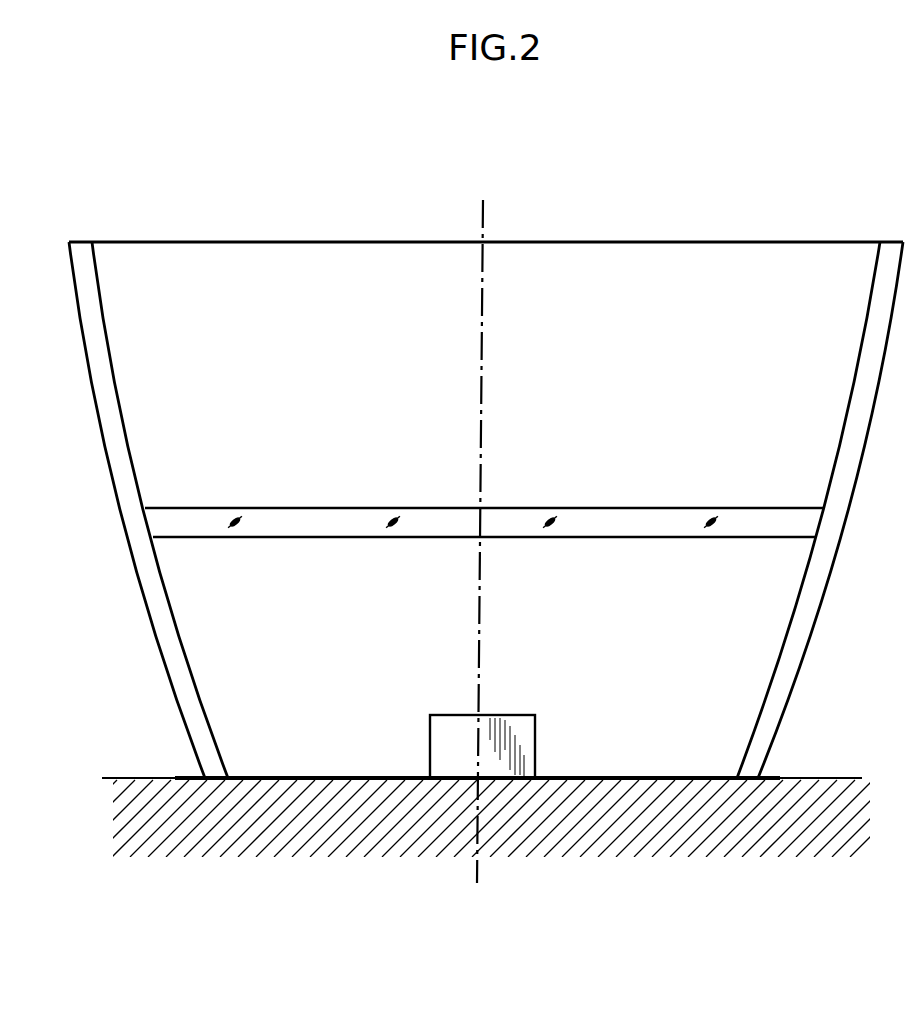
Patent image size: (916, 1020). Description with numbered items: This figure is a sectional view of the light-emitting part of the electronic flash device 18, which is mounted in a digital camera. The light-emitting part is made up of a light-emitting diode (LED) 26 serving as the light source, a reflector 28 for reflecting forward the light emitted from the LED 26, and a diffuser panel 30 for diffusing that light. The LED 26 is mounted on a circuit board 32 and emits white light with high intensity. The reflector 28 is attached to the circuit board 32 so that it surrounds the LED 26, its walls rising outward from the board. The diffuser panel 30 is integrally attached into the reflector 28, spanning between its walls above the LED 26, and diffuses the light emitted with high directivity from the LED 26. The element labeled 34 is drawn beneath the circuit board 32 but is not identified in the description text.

The electronic flash device 18 is at (160, 176).
The light-emitting diode (LED) 26 is at (435, 742).
The reflector 28 is at (807, 615).
The diffuser panel 30 is at (647, 532).
The circuit board 32 is at (657, 778).
The floor 34 is at (133, 778).